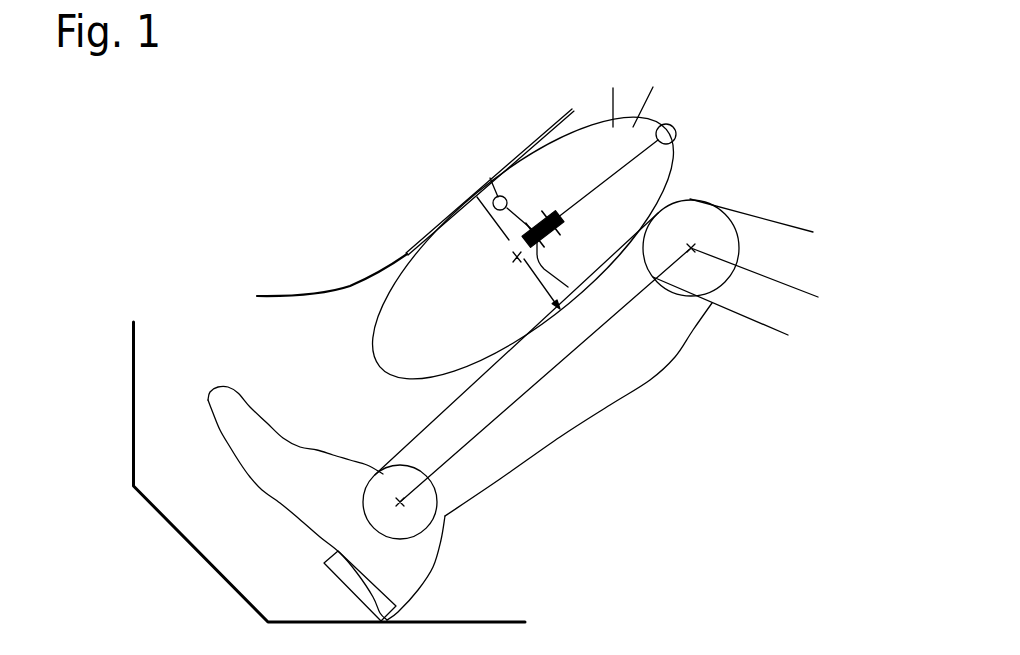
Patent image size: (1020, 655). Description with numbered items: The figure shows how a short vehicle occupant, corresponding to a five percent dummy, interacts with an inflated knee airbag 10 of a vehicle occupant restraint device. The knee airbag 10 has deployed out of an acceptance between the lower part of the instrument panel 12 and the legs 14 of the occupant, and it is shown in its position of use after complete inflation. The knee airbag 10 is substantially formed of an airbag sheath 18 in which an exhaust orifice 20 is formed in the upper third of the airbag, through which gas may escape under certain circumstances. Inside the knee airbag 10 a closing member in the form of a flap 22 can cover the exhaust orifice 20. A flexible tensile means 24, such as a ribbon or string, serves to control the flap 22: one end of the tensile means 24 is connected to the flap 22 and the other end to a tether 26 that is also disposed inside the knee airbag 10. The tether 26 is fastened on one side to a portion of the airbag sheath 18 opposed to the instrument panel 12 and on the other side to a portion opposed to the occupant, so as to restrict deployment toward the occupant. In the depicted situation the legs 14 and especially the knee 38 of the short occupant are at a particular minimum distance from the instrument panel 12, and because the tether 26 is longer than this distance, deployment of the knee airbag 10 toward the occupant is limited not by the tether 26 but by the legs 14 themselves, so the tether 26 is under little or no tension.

The knee airbag 10 is at (680, 131).
The instrument panel 12 is at (323, 297).
The legs 14 is at (600, 418).
The airbag sheath 18 is at (402, 376).
The exhaust orifice 20 is at (623, 102).
The flap 22 is at (633, 145).
The tensile means 24 is at (598, 181).
The tether 26 is at (500, 197).
The knee 38 is at (688, 200).